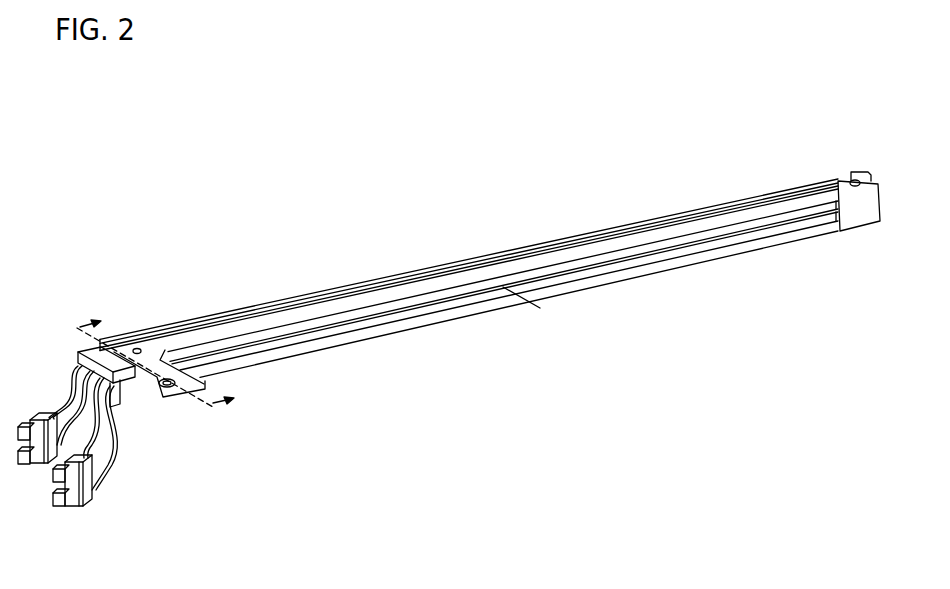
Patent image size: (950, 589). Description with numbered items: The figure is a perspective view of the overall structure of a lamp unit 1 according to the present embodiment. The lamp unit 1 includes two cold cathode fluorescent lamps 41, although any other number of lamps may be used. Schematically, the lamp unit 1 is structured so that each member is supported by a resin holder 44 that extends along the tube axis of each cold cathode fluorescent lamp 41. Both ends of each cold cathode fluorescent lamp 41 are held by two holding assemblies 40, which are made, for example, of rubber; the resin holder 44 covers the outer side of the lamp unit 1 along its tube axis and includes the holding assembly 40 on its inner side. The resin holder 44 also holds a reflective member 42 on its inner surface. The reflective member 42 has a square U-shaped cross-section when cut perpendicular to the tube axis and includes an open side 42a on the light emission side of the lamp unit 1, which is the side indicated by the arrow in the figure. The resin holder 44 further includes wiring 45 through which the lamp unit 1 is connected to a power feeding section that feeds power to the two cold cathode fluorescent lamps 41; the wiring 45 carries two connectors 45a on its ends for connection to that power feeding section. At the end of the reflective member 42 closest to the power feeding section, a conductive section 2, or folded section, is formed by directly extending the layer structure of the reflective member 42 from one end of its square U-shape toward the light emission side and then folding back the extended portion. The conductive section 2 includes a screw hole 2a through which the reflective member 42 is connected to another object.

The lamp unit 1 is at (521, 183).
The conductive section 2 is at (196, 391).
The screw hole 2a is at (164, 389).
The holding assembly 40 is at (858, 215).
The cold cathode fluorescent lamp 41 is at (688, 237).
The reflective member 42 is at (405, 300).
The open side 42a is at (577, 323).
The resin holder 44 is at (437, 267).
The wiring 45 is at (142, 466).
The connector 45a is at (42, 424).